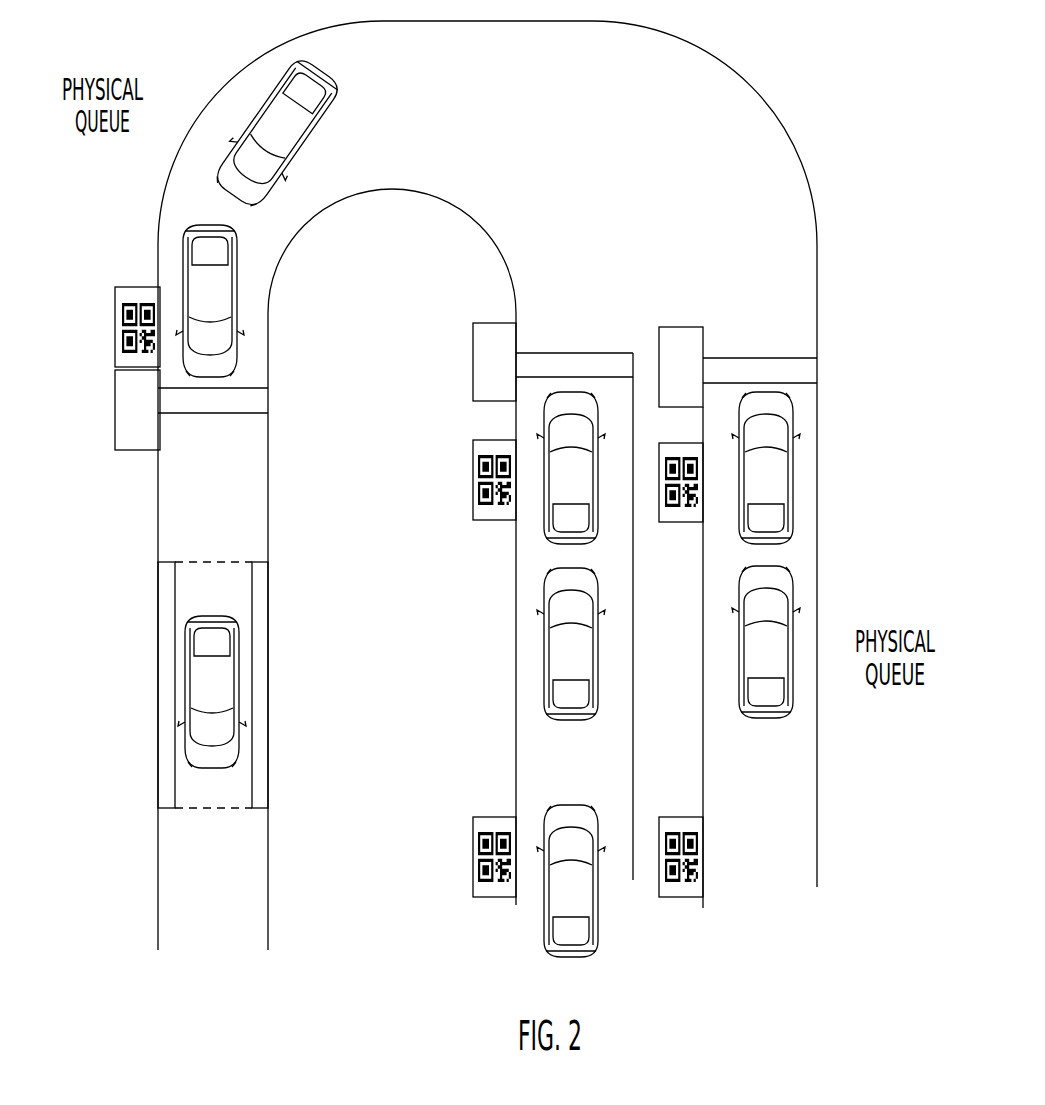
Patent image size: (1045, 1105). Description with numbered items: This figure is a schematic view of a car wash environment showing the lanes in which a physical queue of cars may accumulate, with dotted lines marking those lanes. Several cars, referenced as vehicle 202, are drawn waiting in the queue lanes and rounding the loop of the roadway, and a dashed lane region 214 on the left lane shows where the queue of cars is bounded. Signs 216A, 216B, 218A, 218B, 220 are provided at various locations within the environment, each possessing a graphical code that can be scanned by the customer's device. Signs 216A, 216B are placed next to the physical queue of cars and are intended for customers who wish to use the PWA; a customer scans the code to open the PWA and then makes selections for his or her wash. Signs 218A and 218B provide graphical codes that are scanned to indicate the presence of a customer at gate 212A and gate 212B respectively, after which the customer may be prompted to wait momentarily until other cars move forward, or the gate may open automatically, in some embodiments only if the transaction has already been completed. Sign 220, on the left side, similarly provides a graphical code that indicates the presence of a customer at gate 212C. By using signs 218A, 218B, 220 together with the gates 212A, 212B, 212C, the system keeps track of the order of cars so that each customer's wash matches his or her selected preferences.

The vehicle 202 is at (258, 118).
The gate 212A is at (473, 368).
The gate 212B is at (680, 327).
The gate 212C is at (115, 412).
The pickup area 214 is at (158, 612).
The sign 216A is at (473, 860).
The sign 216B is at (680, 897).
The sign 218A is at (473, 490).
The sign 218B is at (678, 522).
The sign 220 is at (115, 320).